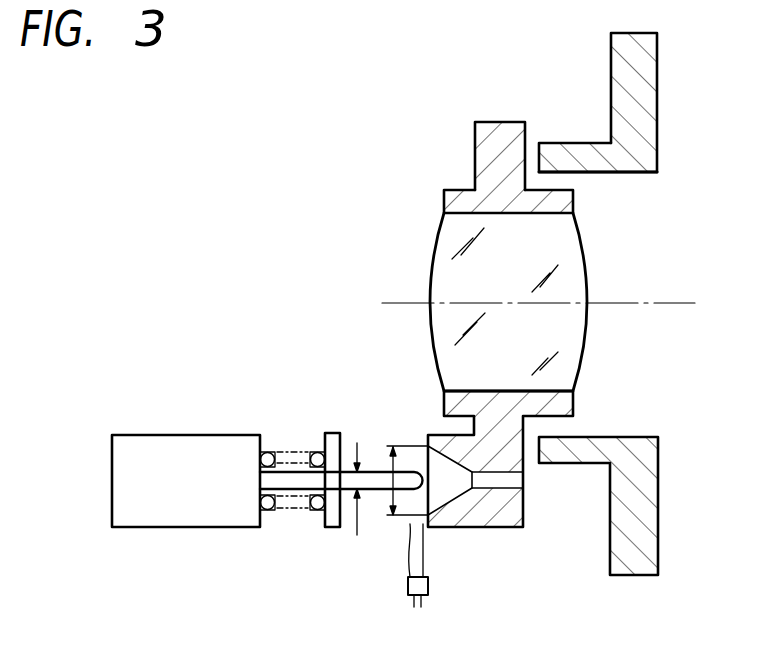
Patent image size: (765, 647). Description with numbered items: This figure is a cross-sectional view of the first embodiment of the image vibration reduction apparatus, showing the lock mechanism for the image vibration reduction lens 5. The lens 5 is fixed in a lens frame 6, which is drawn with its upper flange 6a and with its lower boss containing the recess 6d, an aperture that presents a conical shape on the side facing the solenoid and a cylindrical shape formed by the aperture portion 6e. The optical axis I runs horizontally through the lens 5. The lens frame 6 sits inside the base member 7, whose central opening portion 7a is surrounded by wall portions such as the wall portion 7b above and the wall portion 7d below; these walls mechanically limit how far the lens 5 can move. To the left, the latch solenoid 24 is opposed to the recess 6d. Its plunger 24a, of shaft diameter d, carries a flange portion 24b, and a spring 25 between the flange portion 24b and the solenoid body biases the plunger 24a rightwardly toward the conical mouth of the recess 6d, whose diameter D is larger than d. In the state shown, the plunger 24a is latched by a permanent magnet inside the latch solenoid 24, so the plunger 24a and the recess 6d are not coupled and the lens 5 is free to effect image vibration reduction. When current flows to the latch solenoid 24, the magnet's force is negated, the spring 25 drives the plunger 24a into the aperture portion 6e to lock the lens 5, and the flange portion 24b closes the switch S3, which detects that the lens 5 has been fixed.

The image vibration reduction lens 5 is at (441, 240).
The lens frame 6 is at (488, 147).
The holder flange 6a is at (558, 188).
The recess 6d is at (447, 490).
The aperture portion 6e is at (512, 481).
The base member 7 is at (650, 58).
The central opening portion 7a is at (632, 173).
The wall portion 7b is at (572, 148).
The wall portion 7d is at (577, 458).
The latch solenoid 24 is at (172, 517).
The plunger 24a is at (372, 484).
The flange portion 24b is at (332, 433).
The spring 25 is at (280, 452).
The diameter of tapered hole D is at (391, 468).
The diameter of shaft d is at (358, 501).
The switch S3 is at (428, 587).
The optical axis I is at (408, 303).